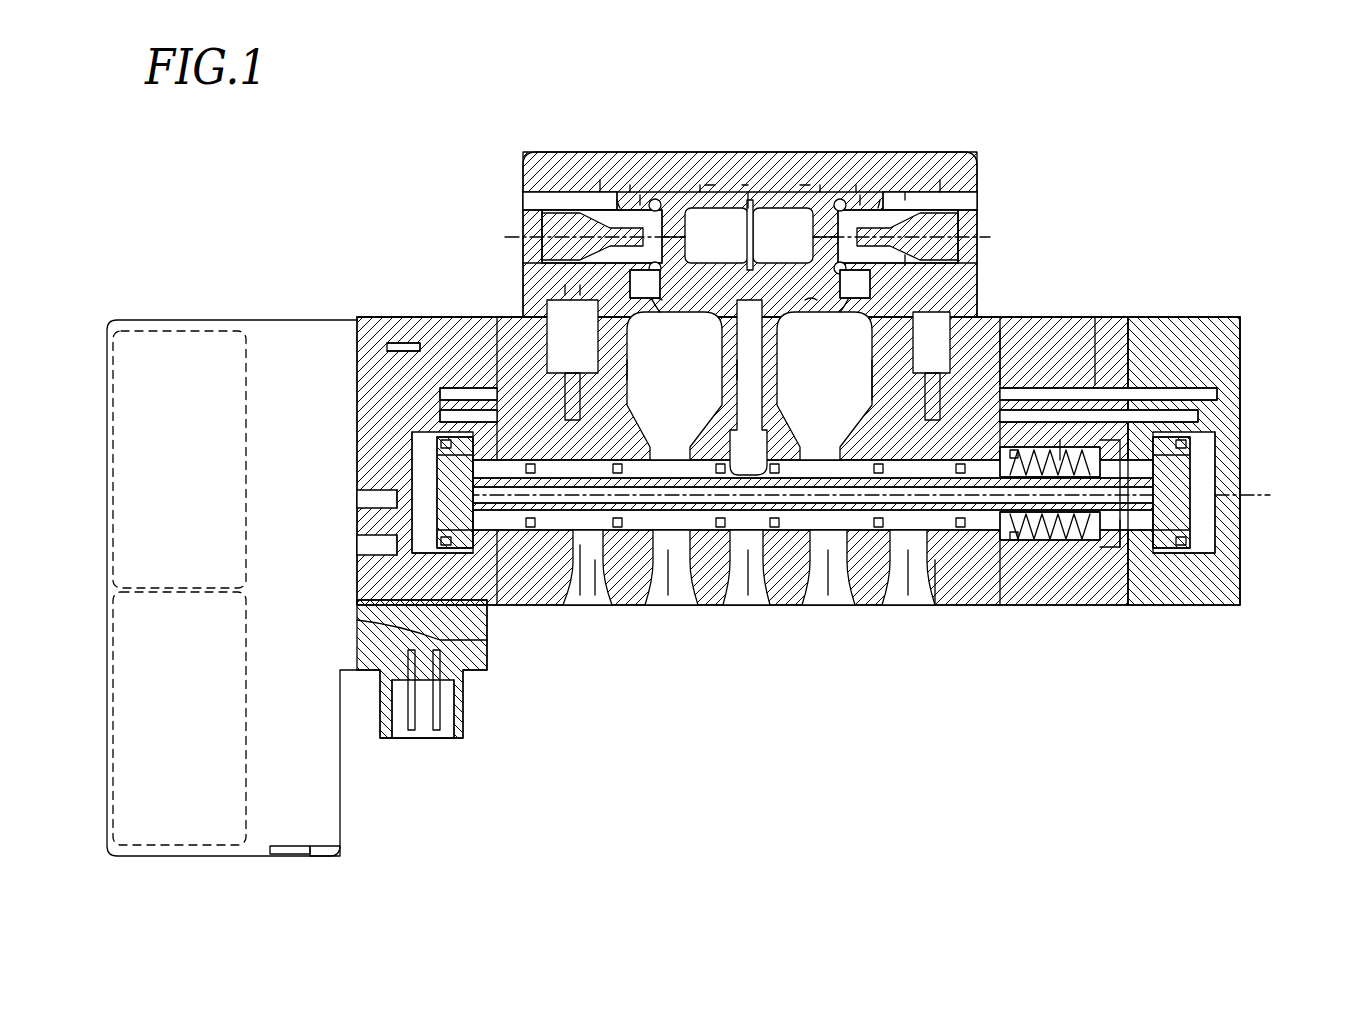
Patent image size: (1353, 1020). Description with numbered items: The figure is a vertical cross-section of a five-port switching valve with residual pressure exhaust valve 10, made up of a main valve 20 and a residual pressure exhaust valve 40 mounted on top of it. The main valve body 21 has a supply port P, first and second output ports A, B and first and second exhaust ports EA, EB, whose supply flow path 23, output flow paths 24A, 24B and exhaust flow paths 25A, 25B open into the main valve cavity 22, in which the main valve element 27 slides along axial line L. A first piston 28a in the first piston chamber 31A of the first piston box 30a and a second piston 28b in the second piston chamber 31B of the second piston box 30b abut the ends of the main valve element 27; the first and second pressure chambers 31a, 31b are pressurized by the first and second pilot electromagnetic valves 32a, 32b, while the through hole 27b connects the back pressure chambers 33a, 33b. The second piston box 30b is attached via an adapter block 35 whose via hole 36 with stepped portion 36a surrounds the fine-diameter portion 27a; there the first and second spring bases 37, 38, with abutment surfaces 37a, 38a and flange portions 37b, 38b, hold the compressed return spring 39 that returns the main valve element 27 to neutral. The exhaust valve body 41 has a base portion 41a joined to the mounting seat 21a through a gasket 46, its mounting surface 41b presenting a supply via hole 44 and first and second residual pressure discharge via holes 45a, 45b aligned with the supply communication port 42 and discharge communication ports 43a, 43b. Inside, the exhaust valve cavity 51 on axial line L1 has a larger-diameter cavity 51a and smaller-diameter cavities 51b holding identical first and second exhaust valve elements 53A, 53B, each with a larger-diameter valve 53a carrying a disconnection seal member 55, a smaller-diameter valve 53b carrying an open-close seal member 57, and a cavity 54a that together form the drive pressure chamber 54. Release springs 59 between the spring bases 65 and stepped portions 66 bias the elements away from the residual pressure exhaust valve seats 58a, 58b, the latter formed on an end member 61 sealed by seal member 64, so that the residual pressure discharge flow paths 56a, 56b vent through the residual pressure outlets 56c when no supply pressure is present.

The five-port switching valve with residual pressure exhaust valve 10 is at (1140, 148).
The main valve 20 is at (1112, 704).
The main valve body 21 is at (961, 626).
The mounting seat 21a is at (1001, 330).
The main valve cavity 22 is at (935, 592).
The supply flow path 23 is at (735, 592).
The first output flow path 24A is at (690, 592).
The second output flow path 24B is at (792, 592).
The first exhaust flow path 25A is at (572, 592).
The second exhaust flow path 25B is at (872, 592).
The main valve element 27 is at (648, 590).
The fine-diameter portion 27a is at (1020, 452).
The through hole 27b is at (608, 592).
The first piston 28a is at (445, 442).
The second piston 28b is at (1182, 448).
The first piston box 30a is at (368, 298).
The second piston box 30b is at (1222, 300).
The first pressure chamber 31a is at (430, 470).
The second pressure chamber 31b is at (1200, 520).
The first piston chamber 31A is at (420, 535).
The second piston chamber 31B is at (1215, 560).
The first pilot electromagnetic valve 32a is at (160, 332).
The second pilot electromagnetic valve 32b is at (246, 760).
The back pressure chamber 33a is at (470, 645).
The back pressure chamber 33b is at (1220, 592).
The adapter block 35 is at (1104, 302).
The via hole 36 is at (1060, 542).
The stepped portion 36a is at (1125, 445).
The first spring base 37 is at (1030, 542).
The abutment surface 37a is at (980, 556).
The flange portion 37b is at (1005, 562).
The second spring base 38 is at (1090, 548).
The abutment surface 38a is at (1135, 560).
The flange portion 38b is at (1150, 565).
The return spring 39 is at (1035, 455).
The residual pressure exhaust valve 40 is at (519, 137).
The exhaust valve body 41 is at (560, 180).
The base portion 41a is at (565, 290).
The mounting surface 41b is at (872, 392).
The supply communication port 42 is at (735, 400).
The first discharge communication port 43a is at (690, 444).
The second discharge communication port 43b is at (850, 444).
The supply via hole 44 is at (735, 360).
The first residual pressure discharge via hole 45a is at (648, 361).
The second residual pressure discharge via hole 45b is at (848, 361).
The gasket 46 is at (592, 380).
The exhaust valve cavity 51 is at (752, 200).
The larger-diameter cavity 51a is at (750, 205).
The smaller-diameter cavity 51b is at (940, 228).
The first exhaust valve element 53A is at (706, 185).
The second exhaust valve element 53B is at (800, 185).
The larger-diameter valve 53a is at (820, 188).
The smaller-diameter valve 53b is at (940, 188).
The drive pressure chamber 54 is at (765, 196).
The cavity 54a is at (800, 250).
The disconnection seal member 55 is at (742, 185).
The first residual pressure discharge flow path 56a is at (580, 290).
The second residual pressure discharge flow path 56b is at (905, 260).
The residual pressure outlet 56c is at (955, 198).
The open-close seal member 57 is at (860, 190).
The first residual pressure exhaust valve seat 58a is at (620, 205).
The second residual pressure exhaust valve seat 58b is at (880, 205).
The release spring 59 is at (840, 198).
The end member 61 is at (905, 192).
The seal member 64 is at (905, 378).
The spring base 65 is at (800, 300).
The stepped portion 66 is at (856, 188).
The axial line L is at (873, 492).
The axial line L1 is at (763, 234).
The first output port A is at (672, 606).
The second output port B is at (828, 606).
The supply port P is at (750, 606).
The first exhaust port EA is at (586, 606).
The second exhaust port EB is at (910, 606).